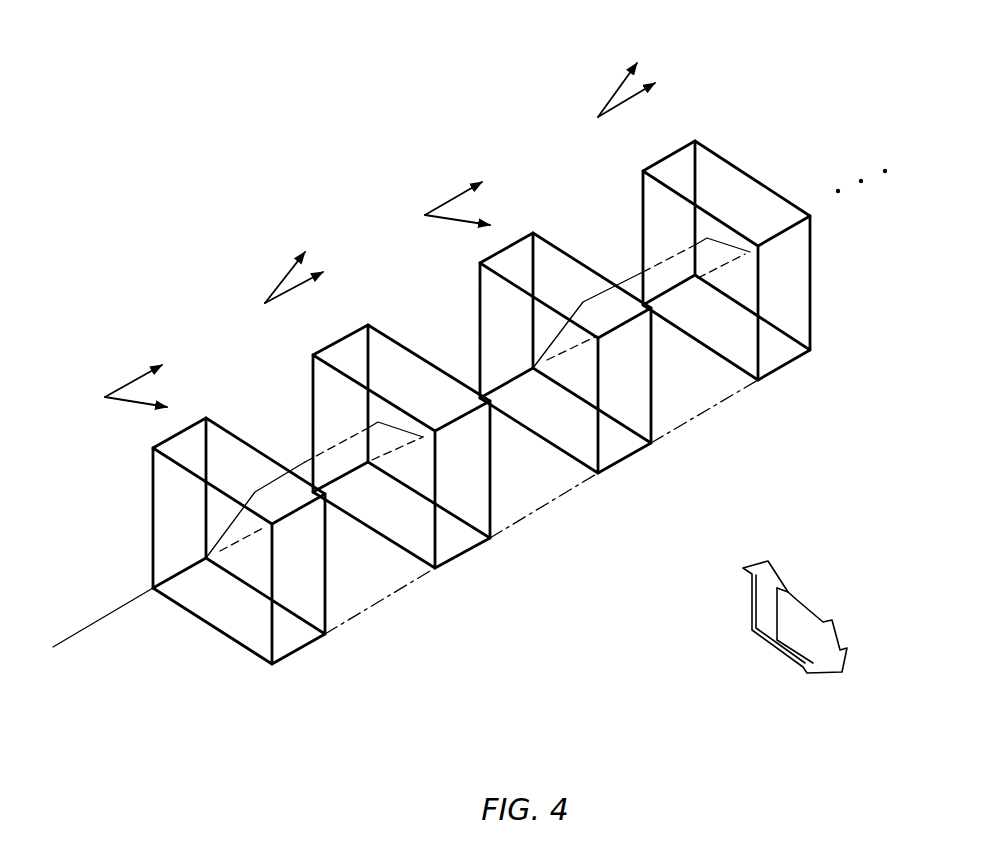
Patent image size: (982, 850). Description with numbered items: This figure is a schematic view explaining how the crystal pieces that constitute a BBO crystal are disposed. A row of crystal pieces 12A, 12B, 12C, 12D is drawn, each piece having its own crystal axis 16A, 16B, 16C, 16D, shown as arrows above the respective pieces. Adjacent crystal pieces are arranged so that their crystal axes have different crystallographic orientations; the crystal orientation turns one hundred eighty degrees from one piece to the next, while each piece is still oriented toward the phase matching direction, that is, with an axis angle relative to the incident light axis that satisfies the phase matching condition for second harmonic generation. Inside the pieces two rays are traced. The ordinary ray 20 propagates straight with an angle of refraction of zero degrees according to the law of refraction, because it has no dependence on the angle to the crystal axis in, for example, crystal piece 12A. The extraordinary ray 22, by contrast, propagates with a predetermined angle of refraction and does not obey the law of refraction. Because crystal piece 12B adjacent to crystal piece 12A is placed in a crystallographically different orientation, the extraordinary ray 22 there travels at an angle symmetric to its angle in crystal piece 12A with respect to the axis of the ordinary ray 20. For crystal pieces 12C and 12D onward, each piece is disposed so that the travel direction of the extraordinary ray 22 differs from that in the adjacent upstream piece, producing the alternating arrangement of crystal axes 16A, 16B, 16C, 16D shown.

The crystal piece 12A is at (296, 650).
The crystal piece 12B is at (452, 560).
The crystal piece 12C is at (623, 465).
The crystal piece 12D is at (795, 368).
The crystal axis 16A is at (127, 385).
The crystal axis 16B is at (283, 280).
The crystal axis 16C is at (455, 220).
The crystal axis 16D is at (617, 90).
The ordinary ray 20 is at (242, 555).
The extraordinary ray 22 is at (240, 555).